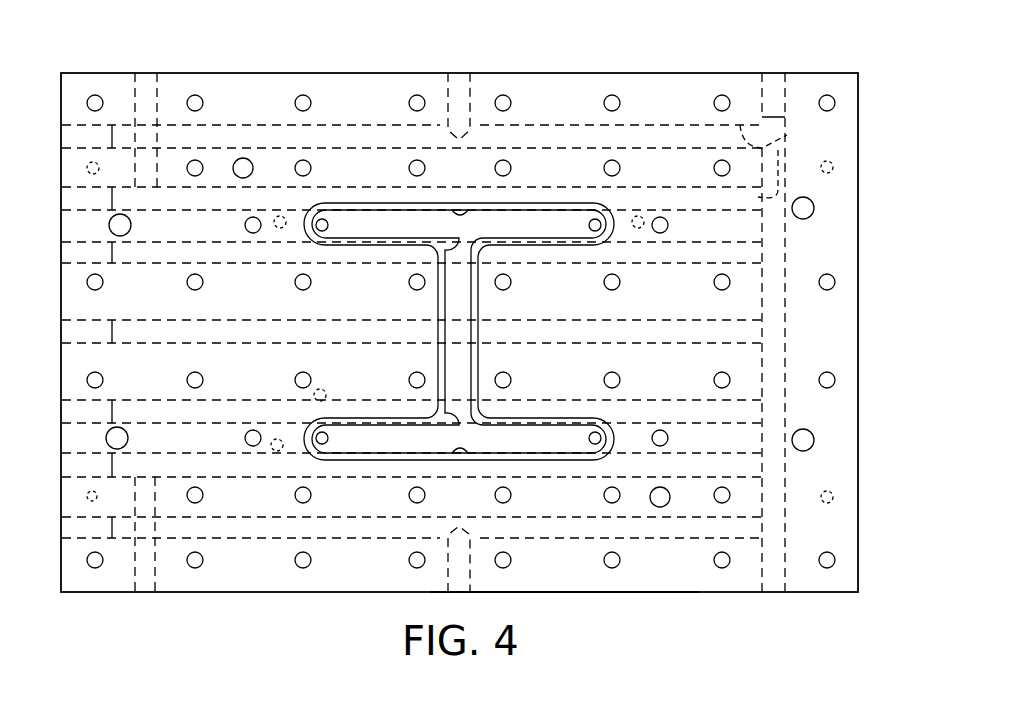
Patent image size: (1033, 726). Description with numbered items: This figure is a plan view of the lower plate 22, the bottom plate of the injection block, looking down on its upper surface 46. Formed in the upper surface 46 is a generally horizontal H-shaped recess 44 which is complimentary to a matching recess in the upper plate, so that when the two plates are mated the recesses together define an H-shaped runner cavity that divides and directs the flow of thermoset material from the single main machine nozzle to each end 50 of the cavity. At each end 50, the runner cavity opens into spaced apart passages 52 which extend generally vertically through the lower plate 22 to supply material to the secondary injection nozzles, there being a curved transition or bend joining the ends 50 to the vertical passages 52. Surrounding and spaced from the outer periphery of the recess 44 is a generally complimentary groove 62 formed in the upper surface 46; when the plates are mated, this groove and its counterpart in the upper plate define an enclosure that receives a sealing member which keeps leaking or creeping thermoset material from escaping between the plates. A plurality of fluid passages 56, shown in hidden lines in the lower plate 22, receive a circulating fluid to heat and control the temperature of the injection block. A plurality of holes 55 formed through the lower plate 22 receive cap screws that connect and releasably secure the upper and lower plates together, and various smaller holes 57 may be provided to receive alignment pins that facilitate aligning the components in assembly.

The lower plate 22 is at (600, 66).
The H-shaped recess 44 is at (462, 365).
The upper surface 46 is at (575, 574).
The end of the cavity 50 is at (310, 214).
The spaced apart passages 52 is at (328, 226).
The holes 55 is at (827, 96).
The fluid passages 56 is at (770, 138).
The smaller holes 57 is at (648, 216).
The groove 62 is at (557, 240).